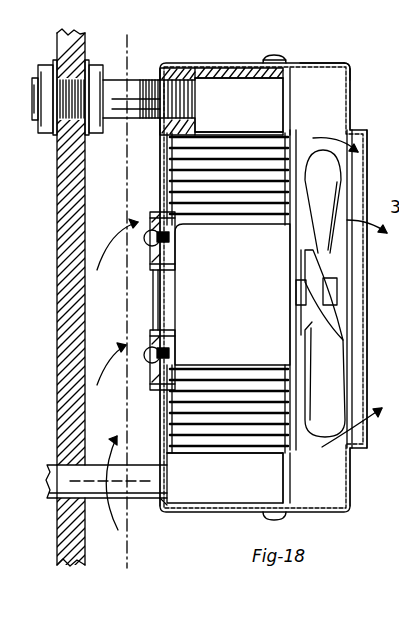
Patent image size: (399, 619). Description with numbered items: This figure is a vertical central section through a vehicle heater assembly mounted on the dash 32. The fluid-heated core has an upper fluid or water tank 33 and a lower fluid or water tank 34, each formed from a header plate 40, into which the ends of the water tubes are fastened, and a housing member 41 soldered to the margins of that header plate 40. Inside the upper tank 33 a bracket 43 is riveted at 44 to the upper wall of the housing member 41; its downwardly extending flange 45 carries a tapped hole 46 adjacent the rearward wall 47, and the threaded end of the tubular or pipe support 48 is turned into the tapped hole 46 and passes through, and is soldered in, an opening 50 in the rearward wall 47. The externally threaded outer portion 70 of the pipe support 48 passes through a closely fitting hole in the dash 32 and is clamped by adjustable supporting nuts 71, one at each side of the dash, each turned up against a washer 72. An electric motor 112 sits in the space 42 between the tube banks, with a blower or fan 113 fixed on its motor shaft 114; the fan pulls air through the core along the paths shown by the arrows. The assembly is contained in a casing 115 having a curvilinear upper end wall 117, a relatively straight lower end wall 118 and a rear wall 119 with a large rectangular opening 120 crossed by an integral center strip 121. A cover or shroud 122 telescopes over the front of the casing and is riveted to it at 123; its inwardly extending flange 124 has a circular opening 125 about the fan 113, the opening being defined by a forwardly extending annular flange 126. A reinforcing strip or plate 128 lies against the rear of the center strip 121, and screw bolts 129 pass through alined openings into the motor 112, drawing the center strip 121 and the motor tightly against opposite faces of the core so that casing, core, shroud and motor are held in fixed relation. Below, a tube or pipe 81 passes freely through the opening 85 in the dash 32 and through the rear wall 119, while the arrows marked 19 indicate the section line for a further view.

The section line 19- 19 is at (108, 42).
The dash 32 is at (84, 300).
The upper fluid or water tank 33 is at (270, 107).
The lower fluid or water tank 34 is at (272, 486).
The header plate 40 is at (283, 128).
The housing member 41 is at (289, 94).
The space of the heating core 42 is at (160, 362).
The bracket 43 is at (351, 83).
The rivet 44 is at (258, 70).
The downwardly extending flange 45 is at (189, 129).
The tapped hole 46 is at (198, 92).
The rearward wall 47 is at (163, 132).
The tubular or pipe support 48 is at (135, 86).
The opening 50 is at (160, 124).
The outer portion of the tubular or pipe support 70 is at (53, 140).
The adjustable supporting nuts 71 is at (42, 65).
The washer 72 is at (58, 36).
The pipe 81 is at (168, 485).
The opening in the dash 85 is at (57, 500).
The electric motor 112 is at (270, 243).
The blower or fan 113 is at (318, 283).
The motor shaft 114 is at (330, 292).
The casing 115 is at (210, 63).
The curvilinear upper end wall 117 is at (187, 63).
The lower end wall 118 is at (330, 388).
The rear wall 119 is at (163, 505).
The rectangular cut-away portion or opening 120 is at (310, 353).
The center strip 121 is at (160, 388).
The cover or shroud 122 is at (330, 63).
The bolts or rivets 123 is at (278, 57).
The inwardly extending flange 124 is at (357, 104).
The circular opening 125 is at (360, 185).
The annular flange 126 is at (360, 450).
The reinforcing strip or plate 128 is at (150, 218).
The screw bolts 129 is at (150, 244).